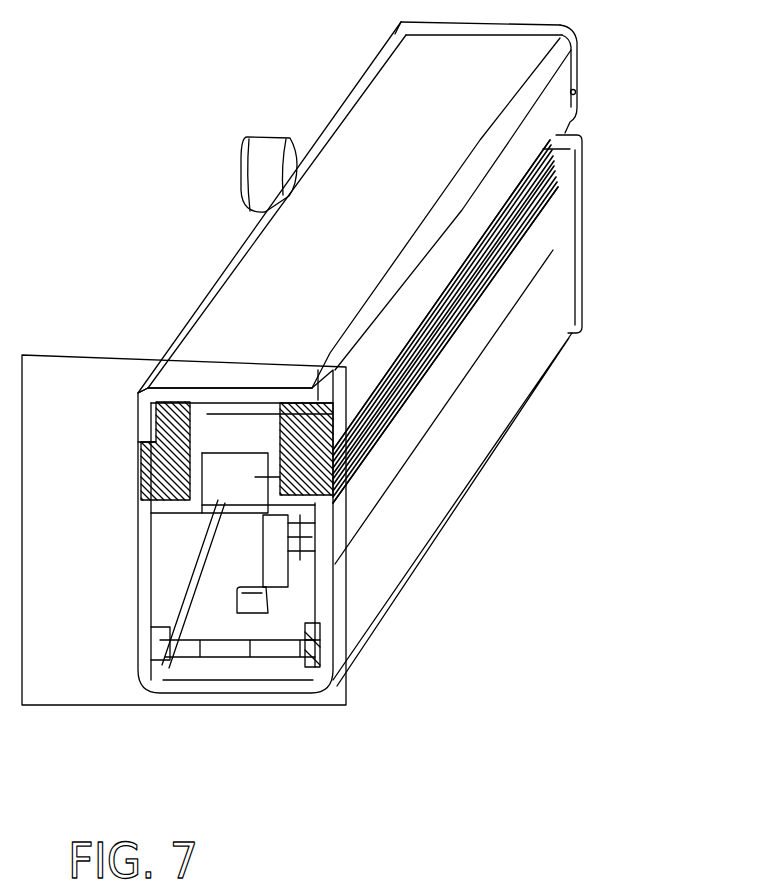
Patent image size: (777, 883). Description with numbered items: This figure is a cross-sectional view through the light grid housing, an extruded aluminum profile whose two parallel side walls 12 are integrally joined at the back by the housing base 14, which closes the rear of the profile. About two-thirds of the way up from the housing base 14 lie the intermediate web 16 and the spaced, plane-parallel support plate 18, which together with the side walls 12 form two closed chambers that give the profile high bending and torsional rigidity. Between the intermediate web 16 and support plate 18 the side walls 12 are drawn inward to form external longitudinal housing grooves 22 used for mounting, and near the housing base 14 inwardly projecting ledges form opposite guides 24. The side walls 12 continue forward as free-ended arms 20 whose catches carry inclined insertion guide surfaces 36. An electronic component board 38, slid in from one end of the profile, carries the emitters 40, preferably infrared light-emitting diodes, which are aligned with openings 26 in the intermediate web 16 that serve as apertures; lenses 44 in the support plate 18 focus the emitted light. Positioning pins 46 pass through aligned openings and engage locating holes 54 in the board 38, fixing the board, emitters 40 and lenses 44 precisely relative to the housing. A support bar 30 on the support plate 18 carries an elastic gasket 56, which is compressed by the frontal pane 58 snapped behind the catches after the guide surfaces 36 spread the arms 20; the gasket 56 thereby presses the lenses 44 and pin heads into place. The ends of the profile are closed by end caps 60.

The side walls 12 is at (462, 437).
The housing base 14 is at (240, 693).
The intermediate web 16 is at (222, 494).
The support plate 18 is at (160, 463).
The arms 20 is at (138, 393).
The housing grooves 22 is at (576, 167).
The guides 24 is at (160, 633).
The openings 26 is at (335, 515).
The support bar 30 is at (148, 428).
The inclined insertion guide surfaces 36 is at (208, 300).
The electronic component board 38 is at (280, 645).
The emitters 40 is at (283, 560).
The lenses 44 is at (237, 414).
The positioning pins 46 is at (300, 576).
The locating holes 54 is at (270, 575).
The gasket 56 is at (363, 453).
The frontal pane 58 is at (258, 396).
The end caps 60 is at (584, 230).